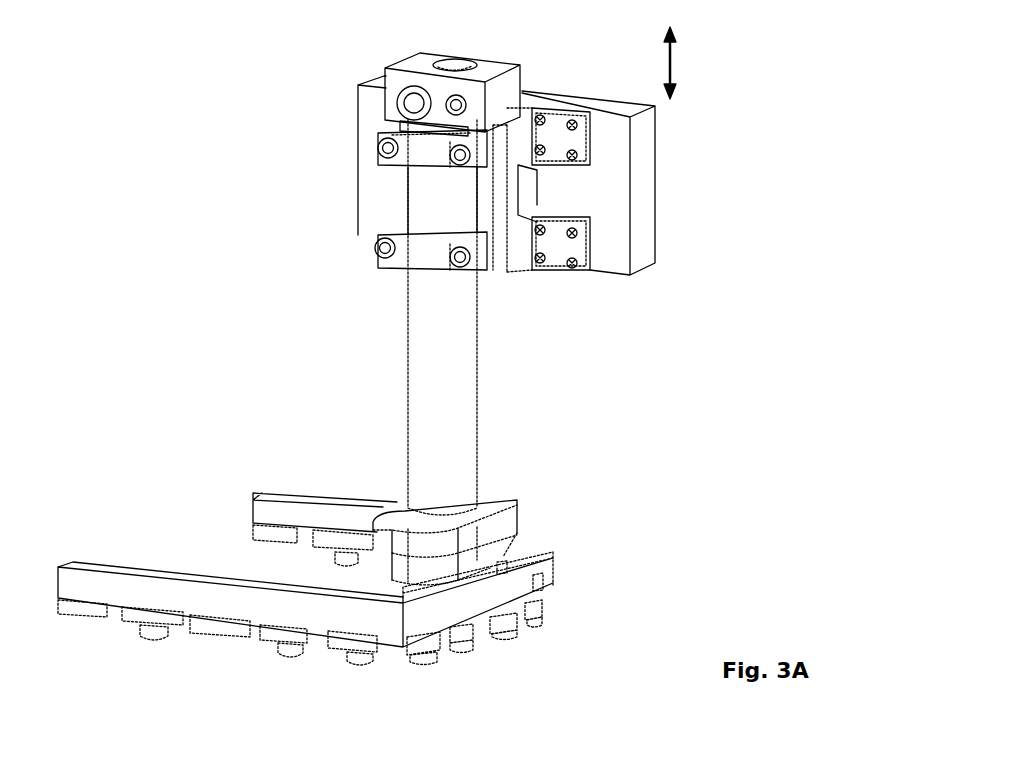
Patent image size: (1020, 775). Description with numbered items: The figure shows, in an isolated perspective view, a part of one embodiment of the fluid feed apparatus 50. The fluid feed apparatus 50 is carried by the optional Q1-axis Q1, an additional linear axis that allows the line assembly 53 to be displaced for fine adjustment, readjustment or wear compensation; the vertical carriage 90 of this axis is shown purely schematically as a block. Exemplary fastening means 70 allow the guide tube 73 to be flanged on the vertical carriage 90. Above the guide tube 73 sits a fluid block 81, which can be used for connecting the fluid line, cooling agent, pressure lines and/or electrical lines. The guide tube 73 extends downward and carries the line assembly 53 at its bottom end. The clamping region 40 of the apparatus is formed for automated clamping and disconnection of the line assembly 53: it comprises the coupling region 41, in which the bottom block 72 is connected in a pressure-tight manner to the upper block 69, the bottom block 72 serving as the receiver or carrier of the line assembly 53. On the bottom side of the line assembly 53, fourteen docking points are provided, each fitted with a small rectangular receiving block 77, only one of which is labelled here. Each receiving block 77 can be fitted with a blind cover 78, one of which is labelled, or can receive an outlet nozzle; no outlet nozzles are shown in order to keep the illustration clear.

The fluid feed apparatus 50 is at (138, 83).
The Q1-axis Q1 is at (688, 63).
The vertical carriage 90 is at (643, 172).
The fluid block 81 is at (412, 57).
The fastening means 70 is at (560, 290).
The guide tube 73 is at (465, 348).
The clamping region 40 is at (568, 487).
The upper block 69 is at (498, 515).
The coupling region 41 is at (492, 545).
The bottom block 72 is at (467, 560).
The line assembly 53 is at (425, 623).
The receiving block 77 is at (77, 610).
The blind cover 78 is at (158, 630).